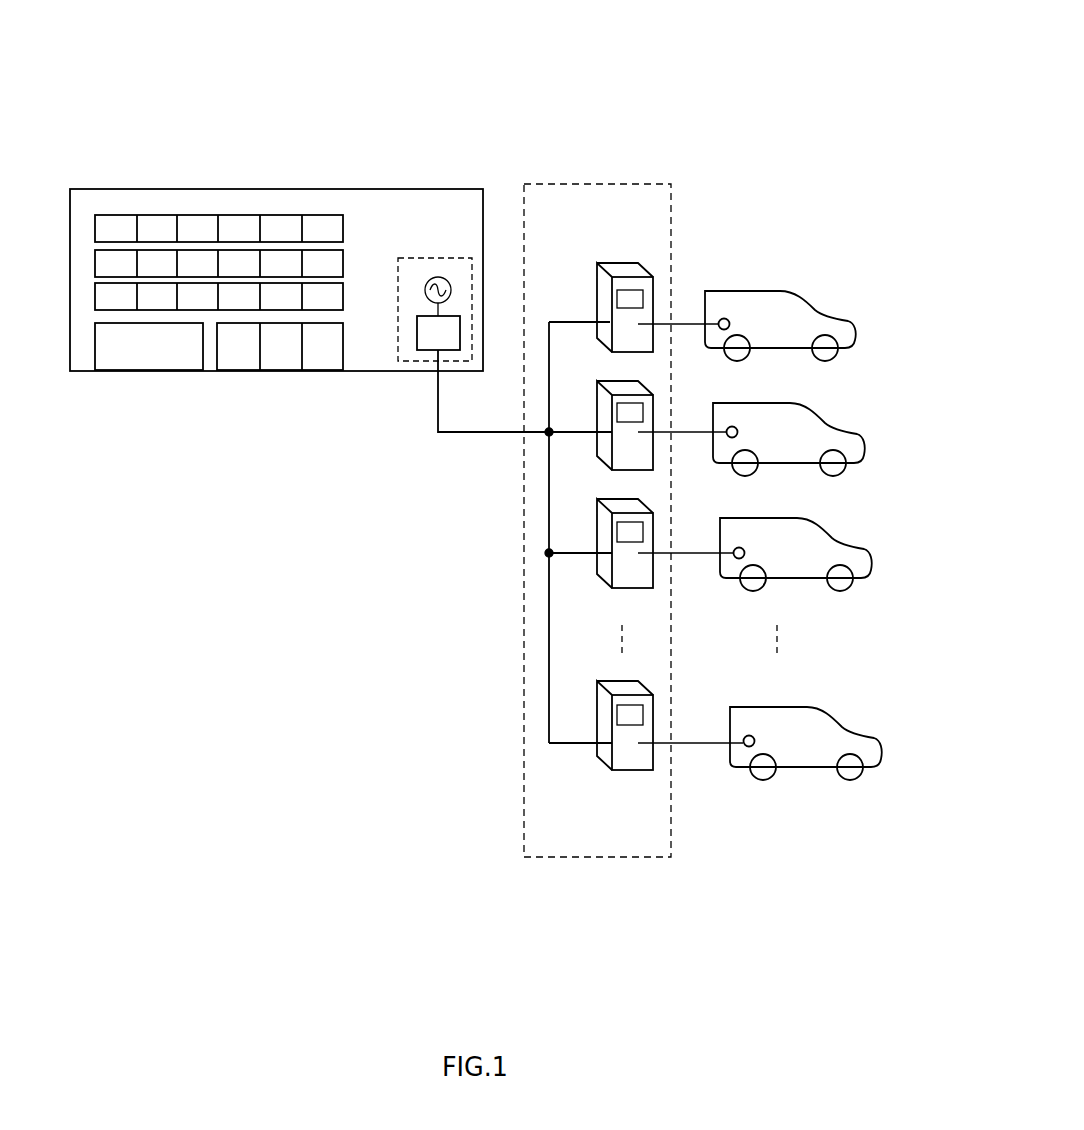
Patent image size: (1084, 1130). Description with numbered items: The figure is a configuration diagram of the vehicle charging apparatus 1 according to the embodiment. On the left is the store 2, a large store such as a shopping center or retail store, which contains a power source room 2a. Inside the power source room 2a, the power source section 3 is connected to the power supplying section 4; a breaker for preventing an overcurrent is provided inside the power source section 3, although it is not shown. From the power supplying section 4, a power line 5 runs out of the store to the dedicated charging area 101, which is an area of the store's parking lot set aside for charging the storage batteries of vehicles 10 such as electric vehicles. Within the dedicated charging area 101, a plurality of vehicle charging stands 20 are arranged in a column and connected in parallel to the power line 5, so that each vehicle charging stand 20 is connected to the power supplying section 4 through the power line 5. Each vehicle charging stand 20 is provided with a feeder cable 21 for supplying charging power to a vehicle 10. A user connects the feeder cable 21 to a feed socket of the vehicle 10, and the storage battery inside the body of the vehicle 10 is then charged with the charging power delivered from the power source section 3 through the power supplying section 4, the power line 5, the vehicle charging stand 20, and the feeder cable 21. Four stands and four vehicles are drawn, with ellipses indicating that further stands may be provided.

The vehicle charging apparatus 1 is at (683, 90).
The store 2 is at (168, 189).
The power source room 2a is at (398, 258).
The power source section 3 is at (441, 277).
The power supplying section 4 is at (425, 351).
The power line 5 is at (497, 435).
The dedicated charging area 101 is at (568, 185).
The vehicle charging stand 20 is at (615, 262).
The feeder cable 21 is at (685, 322).
The vehicle 10 is at (852, 320).